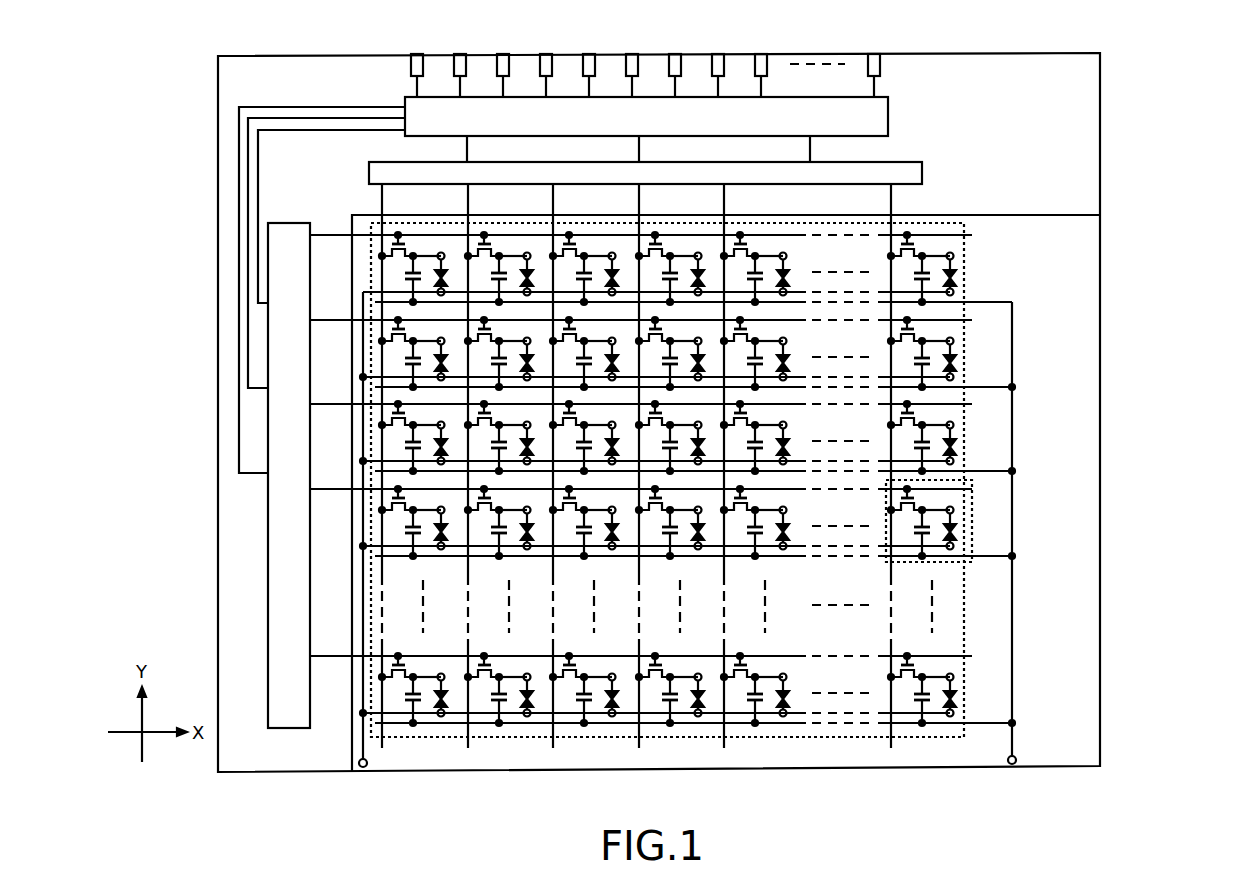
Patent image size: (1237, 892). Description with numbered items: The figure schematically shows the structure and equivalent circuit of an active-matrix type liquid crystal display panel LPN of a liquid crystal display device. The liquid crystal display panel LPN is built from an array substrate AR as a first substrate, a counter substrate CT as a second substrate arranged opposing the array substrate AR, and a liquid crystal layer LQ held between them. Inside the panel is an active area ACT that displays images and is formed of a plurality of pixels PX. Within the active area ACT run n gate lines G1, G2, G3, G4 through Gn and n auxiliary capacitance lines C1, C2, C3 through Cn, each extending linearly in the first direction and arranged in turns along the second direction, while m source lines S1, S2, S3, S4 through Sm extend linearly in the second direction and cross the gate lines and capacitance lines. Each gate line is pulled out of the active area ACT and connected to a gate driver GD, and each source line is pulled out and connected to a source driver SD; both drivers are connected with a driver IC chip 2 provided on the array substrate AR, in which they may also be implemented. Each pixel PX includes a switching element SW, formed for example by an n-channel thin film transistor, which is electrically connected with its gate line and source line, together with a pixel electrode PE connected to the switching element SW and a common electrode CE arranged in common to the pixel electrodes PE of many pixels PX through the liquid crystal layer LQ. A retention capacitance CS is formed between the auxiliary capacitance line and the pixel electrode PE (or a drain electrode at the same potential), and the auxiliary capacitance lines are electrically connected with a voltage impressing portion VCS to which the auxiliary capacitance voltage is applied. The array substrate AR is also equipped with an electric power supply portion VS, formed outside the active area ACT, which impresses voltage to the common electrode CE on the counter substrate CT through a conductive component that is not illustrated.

The driver IC chip 2 is at (887, 96).
The liquid crystal display panel LPN is at (1132, 66).
The source driver SD is at (925, 170).
The gate driver GD is at (268, 591).
The counter substrate CT is at (1068, 214).
The array substrate AR is at (283, 762).
The active area ACT is at (964, 333).
The pixel PX is at (972, 562).
The switching element SW is at (884, 502).
The pixel electrode PE is at (953, 508).
The liquid crystal layer LQ is at (956, 524).
The common electrode CE is at (954, 543).
The retention capacitance CS is at (903, 534).
The gate line G1 is at (333, 235).
The gate line G2 is at (333, 320).
The gate line G3 is at (333, 404).
The gate line G4 is at (333, 489).
The gate line Gn is at (333, 656).
The source line S1 is at (385, 205).
The source line S2 is at (471, 205).
The source line S3 is at (556, 205).
The source line S4 is at (642, 205).
The source line Sm is at (894, 203).
The auxiliary capacitance line C1 is at (991, 302).
The auxiliary capacitance line C2 is at (991, 387).
The auxiliary capacitance line C3 is at (991, 471).
The auxiliary capacitance line Cn is at (991, 723).
The electric power supply portion VS is at (367, 767).
The voltage impressing portion VCS is at (1016, 757).